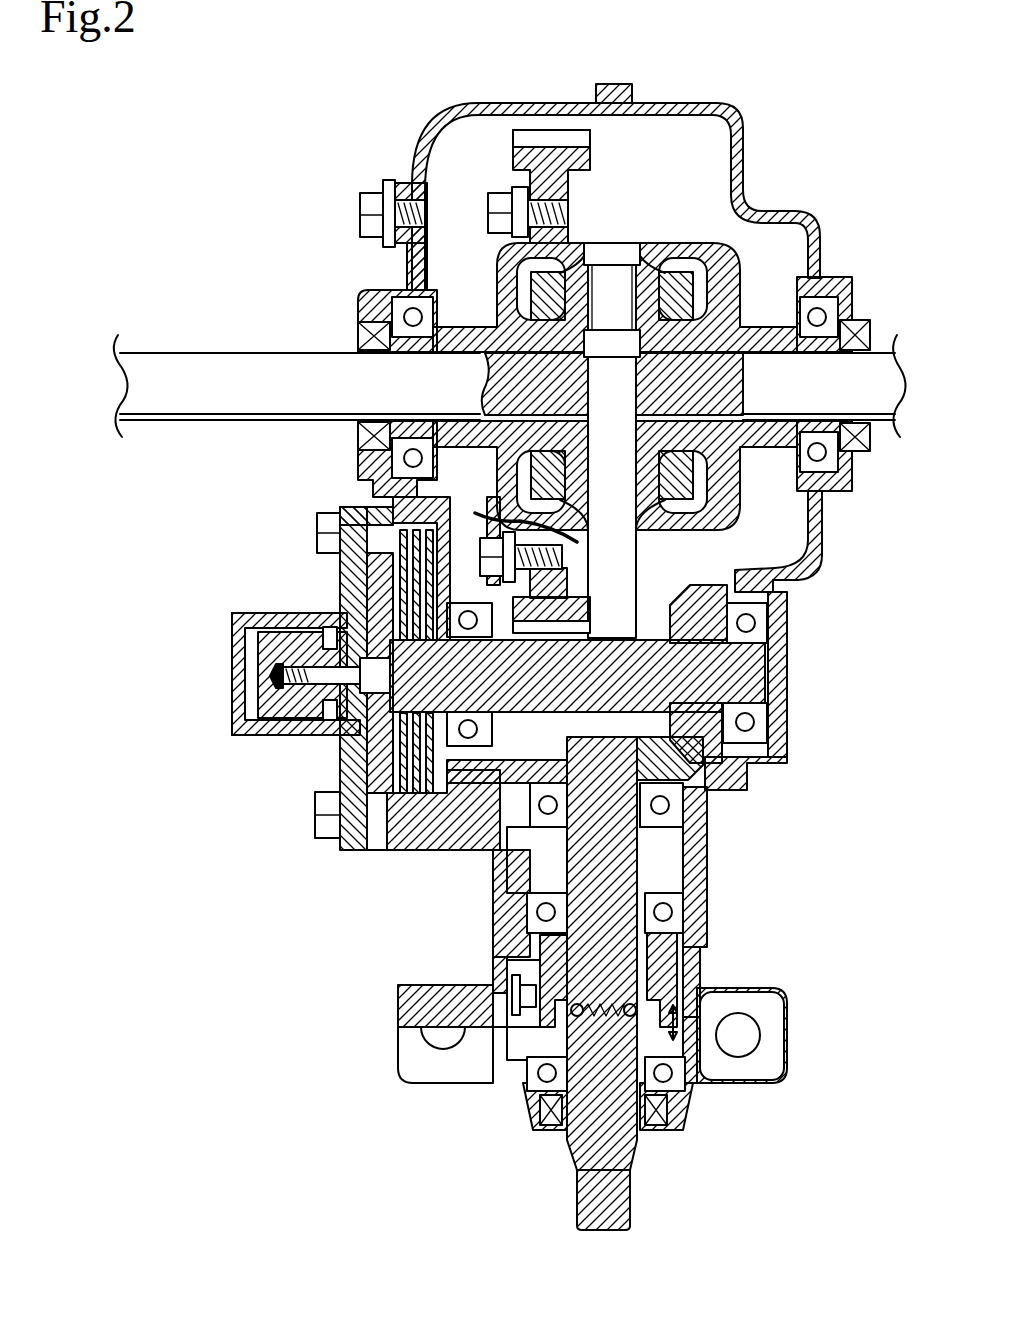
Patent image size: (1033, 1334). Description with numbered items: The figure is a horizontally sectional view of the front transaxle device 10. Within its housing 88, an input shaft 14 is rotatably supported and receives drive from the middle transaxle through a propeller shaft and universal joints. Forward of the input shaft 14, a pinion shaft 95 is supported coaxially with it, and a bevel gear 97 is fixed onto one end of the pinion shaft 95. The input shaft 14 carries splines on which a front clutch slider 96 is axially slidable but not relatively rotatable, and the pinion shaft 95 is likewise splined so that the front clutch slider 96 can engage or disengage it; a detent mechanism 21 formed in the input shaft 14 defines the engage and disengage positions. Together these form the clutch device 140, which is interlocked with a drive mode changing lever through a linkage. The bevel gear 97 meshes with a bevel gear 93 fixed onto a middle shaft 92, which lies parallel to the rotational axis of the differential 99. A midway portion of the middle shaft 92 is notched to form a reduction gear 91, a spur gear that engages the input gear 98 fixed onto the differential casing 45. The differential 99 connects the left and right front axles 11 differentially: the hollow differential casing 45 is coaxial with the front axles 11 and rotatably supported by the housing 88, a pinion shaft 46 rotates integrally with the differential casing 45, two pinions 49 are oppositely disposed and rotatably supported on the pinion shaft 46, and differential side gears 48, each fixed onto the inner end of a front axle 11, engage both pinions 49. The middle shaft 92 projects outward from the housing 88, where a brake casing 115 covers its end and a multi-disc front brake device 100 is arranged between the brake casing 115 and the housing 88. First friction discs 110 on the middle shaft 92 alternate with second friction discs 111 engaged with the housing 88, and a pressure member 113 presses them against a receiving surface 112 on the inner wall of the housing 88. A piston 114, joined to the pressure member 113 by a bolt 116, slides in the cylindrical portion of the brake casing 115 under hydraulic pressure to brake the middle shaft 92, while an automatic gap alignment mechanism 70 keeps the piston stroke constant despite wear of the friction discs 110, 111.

The front transaxle device 10 is at (830, 145).
The front axles 11 is at (254, 368).
The input shaft 14 is at (628, 1194).
The detent mechanism 21 is at (600, 1027).
The differential casing 45 is at (728, 282).
The pinion shaft 46 is at (598, 402).
The differential side gears 48 is at (505, 306).
The pinions 49 is at (678, 243).
The automatic gap alignment mechanism 70 is at (334, 618).
The housing 88 is at (420, 134).
The reduction gear 91 is at (608, 628).
The middle shaft 92 is at (782, 668).
The bevel gear 93 is at (683, 597).
The pinion shaft 95 is at (653, 857).
The front clutch slider 96 is at (517, 1062).
The bevel gear 97 is at (712, 770).
The input gear 98 is at (525, 142).
The differential 99 is at (648, 206).
The front brake device 100 is at (272, 758).
The first friction discs 110 is at (443, 805).
The second friction discs 111 is at (366, 500).
The receiving surface 112 is at (453, 580).
The pressure member 113 is at (384, 800).
The piston 114 is at (260, 690).
The brake casing 115 is at (236, 644).
The bolt 116 is at (368, 768).
The clutch device 140 is at (682, 995).